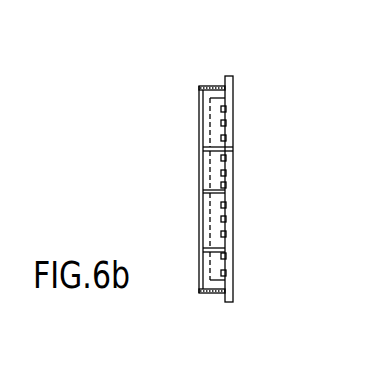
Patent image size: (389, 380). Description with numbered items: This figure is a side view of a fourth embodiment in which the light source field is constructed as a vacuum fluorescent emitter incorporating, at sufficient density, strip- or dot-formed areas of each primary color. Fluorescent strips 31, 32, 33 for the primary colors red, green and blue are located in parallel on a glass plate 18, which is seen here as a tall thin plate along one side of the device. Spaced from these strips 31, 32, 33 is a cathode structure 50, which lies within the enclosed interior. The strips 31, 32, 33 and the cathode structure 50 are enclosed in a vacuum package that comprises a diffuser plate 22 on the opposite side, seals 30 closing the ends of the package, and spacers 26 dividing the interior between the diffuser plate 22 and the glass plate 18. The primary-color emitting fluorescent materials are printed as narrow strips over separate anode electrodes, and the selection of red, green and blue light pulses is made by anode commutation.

The glass plate 18 is at (228, 93).
The diffuser plate 22 is at (199, 112).
The spacers 26 is at (210, 149).
The seals 30 is at (214, 86).
The fluorescent strip 31 is at (226, 108).
The fluorescent strip 32 is at (226, 123).
The fluorescent strip 33 is at (227, 145).
The cathode structure 50 is at (210, 206).